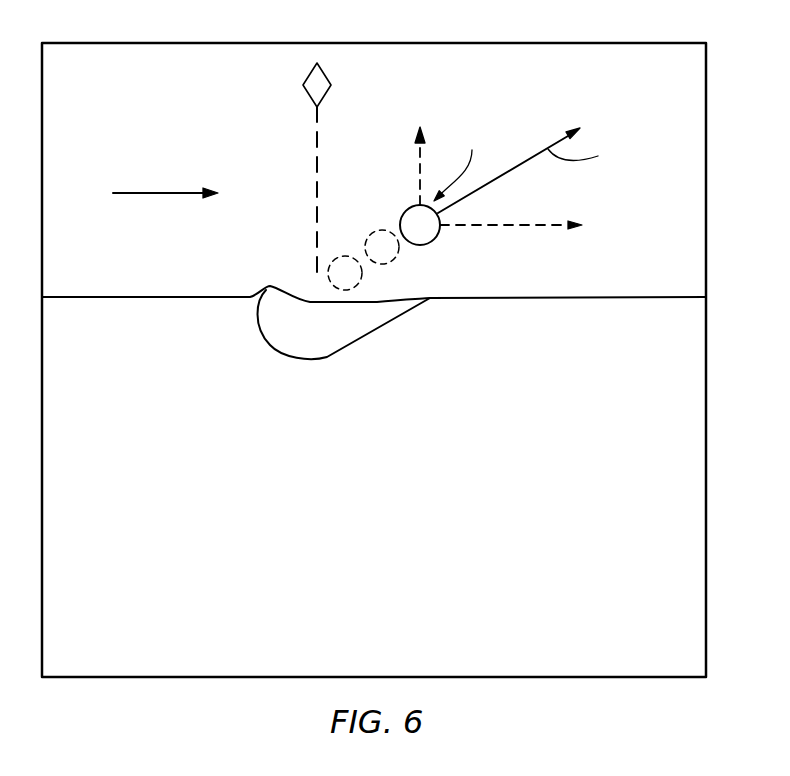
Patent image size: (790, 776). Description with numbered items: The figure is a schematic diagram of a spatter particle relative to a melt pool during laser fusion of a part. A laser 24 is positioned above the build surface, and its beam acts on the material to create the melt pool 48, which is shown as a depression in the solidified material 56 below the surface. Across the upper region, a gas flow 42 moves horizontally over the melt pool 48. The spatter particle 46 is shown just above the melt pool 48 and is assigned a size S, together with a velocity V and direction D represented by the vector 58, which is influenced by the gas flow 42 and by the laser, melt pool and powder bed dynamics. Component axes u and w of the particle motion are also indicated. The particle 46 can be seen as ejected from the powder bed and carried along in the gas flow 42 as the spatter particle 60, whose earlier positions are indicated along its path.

The laser 24 is at (309, 74).
The gas flow 42 is at (155, 192).
The spatter particle 46 is at (434, 242).
The melt pool 48 is at (333, 357).
The solidified material 56 is at (386, 575).
The vector 58 is at (522, 162).
The spatter particle 60 is at (383, 186).